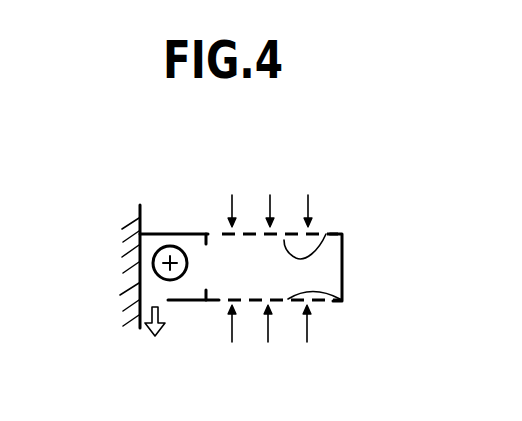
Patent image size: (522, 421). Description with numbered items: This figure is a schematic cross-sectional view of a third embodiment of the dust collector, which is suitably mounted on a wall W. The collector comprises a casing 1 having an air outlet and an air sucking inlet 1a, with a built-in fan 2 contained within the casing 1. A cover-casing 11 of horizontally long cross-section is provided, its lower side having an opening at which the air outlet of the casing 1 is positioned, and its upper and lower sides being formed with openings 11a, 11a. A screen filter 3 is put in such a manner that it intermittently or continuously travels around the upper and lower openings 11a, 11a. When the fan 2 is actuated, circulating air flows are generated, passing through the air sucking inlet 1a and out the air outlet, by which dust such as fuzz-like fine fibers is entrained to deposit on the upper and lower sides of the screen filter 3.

The wall W is at (138, 222).
The casing 1 is at (176, 234).
The air sucking inlet 1a is at (207, 265).
The built-in fan 2 is at (153, 258).
The screen filter 3 is at (292, 234).
The cover-casing 11 is at (160, 297).
The openings 11a is at (326, 234).